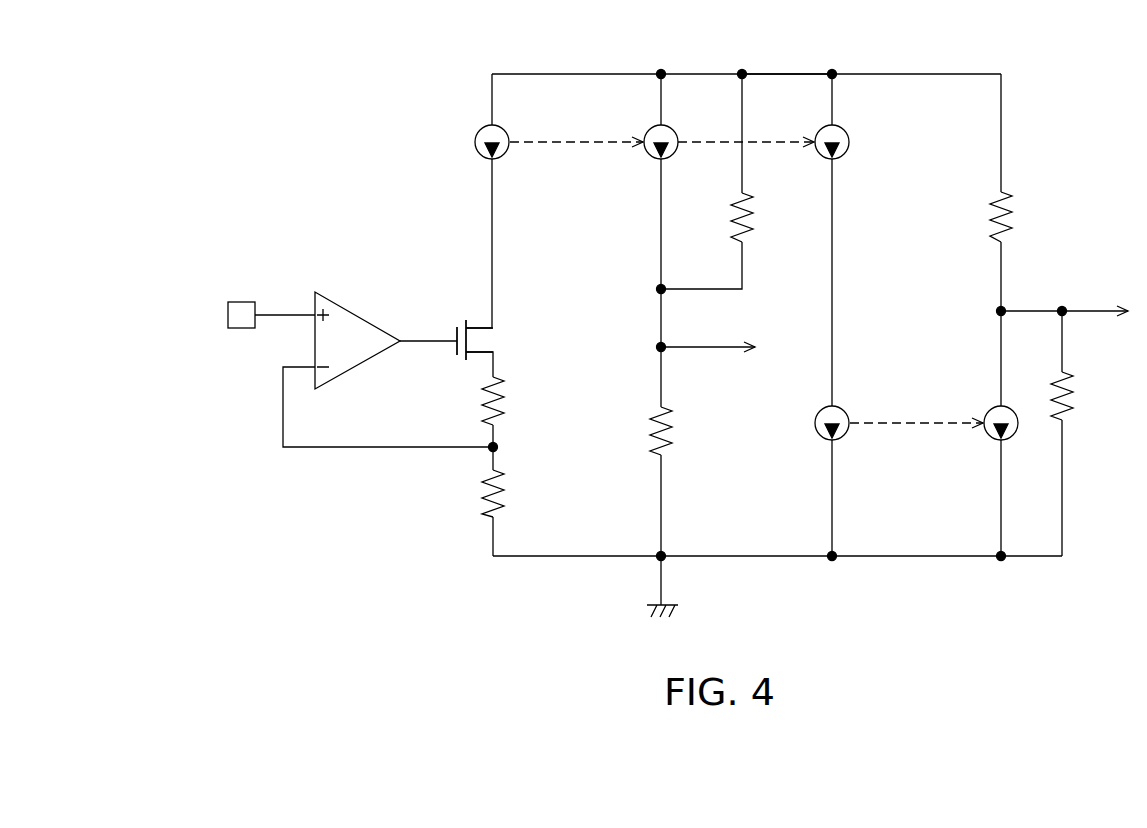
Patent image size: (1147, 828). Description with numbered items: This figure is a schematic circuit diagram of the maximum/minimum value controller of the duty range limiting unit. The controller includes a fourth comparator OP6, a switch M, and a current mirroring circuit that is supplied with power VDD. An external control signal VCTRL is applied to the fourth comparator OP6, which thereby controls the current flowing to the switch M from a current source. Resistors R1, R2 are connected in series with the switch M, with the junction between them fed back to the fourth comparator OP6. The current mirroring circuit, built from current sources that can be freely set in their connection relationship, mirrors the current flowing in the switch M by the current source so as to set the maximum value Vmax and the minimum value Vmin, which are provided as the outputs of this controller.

The fourth comparator OP6 is at (360, 312).
The switch M is at (488, 340).
The first resistor R1 is at (511, 401).
The second resistor R2 is at (511, 493).
The external control signal VCTRL is at (257, 299).
The power VDD is at (787, 58).
The maximum value Vmax is at (708, 336).
The minimum value Vmin is at (1064, 299).